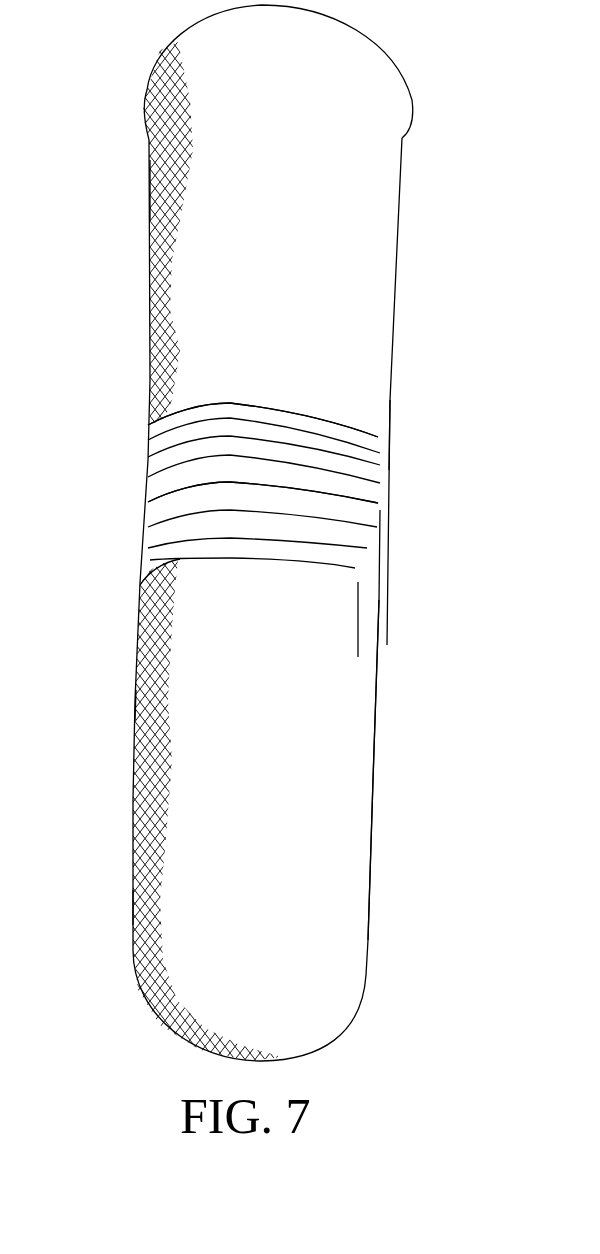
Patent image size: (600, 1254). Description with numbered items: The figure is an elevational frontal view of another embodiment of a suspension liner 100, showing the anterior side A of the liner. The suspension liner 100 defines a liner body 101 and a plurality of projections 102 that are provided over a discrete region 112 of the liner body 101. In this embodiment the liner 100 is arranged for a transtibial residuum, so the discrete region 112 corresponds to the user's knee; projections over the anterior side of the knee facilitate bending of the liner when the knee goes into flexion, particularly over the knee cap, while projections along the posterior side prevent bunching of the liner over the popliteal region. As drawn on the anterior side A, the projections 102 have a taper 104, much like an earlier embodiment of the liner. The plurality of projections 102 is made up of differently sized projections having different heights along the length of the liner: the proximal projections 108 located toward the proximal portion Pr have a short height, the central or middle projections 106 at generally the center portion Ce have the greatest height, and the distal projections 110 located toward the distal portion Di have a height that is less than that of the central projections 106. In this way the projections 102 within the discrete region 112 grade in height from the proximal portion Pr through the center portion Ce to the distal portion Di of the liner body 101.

The suspension liner 100 is at (392, 962).
The liner body 101 is at (376, 770).
The projections 102 is at (405, 578).
The taper 104 is at (330, 643).
The central projections 106 is at (150, 481).
The proximal projections 108 is at (228, 398).
The distal projections 110 is at (142, 583).
The discrete region 112 is at (391, 448).
The proximal portion Pr is at (150, 182).
The center portion Ce is at (137, 708).
The distal portion Di is at (133, 907).
The anterior side A is at (418, 1091).